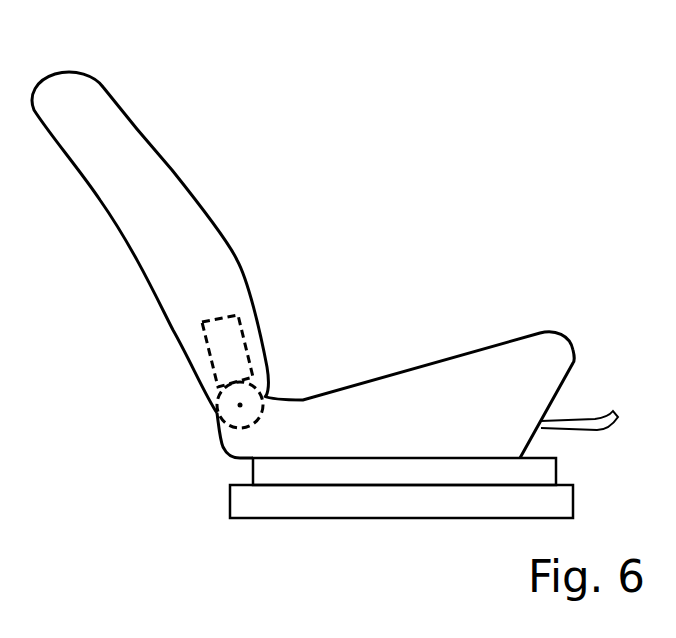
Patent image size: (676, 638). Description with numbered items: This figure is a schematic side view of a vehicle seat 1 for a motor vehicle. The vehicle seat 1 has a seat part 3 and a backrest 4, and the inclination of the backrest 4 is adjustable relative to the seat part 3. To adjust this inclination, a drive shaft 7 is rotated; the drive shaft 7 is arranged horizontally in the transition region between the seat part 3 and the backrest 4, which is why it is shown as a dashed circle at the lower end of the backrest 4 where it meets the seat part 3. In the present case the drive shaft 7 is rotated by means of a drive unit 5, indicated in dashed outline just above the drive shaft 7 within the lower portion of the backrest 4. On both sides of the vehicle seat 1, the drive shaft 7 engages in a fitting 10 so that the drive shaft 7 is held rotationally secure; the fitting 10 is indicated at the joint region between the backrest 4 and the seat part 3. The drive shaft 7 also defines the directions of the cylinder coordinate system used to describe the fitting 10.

The vehicle seat 1 is at (242, 183).
The seat part 3 is at (403, 388).
The backrest 4 is at (123, 150).
The drive unit 5 is at (228, 355).
The drive shaft 7 is at (229, 430).
The fitting 10 is at (214, 416).